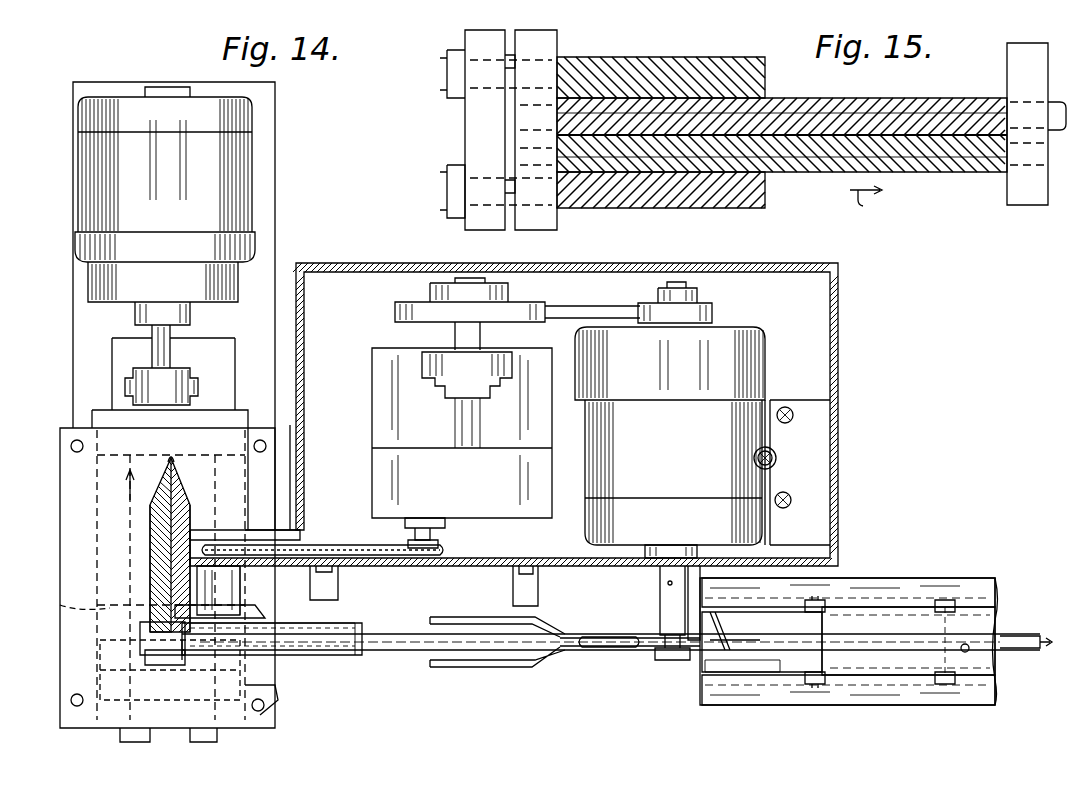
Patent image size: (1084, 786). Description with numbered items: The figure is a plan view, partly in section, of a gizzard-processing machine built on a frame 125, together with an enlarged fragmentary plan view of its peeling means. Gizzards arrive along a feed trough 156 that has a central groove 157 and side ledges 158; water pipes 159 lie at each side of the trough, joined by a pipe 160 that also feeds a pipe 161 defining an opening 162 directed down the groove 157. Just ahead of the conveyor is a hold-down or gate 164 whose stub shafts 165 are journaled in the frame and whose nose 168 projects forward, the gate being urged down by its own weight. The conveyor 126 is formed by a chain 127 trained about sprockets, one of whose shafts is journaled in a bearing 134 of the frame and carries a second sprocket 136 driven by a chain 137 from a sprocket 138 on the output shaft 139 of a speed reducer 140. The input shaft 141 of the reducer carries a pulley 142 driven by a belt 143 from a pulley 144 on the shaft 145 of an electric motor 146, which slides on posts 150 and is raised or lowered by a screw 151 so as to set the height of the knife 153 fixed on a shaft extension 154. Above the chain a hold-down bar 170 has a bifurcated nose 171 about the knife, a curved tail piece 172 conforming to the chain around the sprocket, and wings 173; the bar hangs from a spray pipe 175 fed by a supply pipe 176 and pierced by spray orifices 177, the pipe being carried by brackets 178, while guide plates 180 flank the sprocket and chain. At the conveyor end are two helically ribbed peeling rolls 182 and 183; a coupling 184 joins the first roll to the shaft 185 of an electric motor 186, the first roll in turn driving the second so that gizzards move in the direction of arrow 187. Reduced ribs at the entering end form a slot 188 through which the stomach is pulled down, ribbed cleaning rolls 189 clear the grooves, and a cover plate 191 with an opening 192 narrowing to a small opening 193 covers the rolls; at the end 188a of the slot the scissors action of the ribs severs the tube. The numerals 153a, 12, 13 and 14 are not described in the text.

In FIG. 14, the frame 125 is at (77, 288).
In FIG. 15, the frame 125 is at (557, 226).
In FIG. 14, the electric motor 186 is at (90, 174).
In FIG. 14, the motor shaft 185 is at (158, 348).
In FIG. 14, the coupling 184 is at (130, 385).
In FIG. 14, the small opening 193 is at (175, 470).
In FIG. 14, the peeling roll 182 is at (162, 522).
In FIG. 15, the peeling roll 182 is at (945, 98).
In FIG. 14, the peeling roll 183 is at (160, 432).
In FIG. 15, the peeling roll 183 is at (945, 173).
In FIG. 14, the opening 192 is at (190, 500).
In FIG. 14, the arrow 187 is at (128, 490).
In FIG. 15, the arrow 187 is at (868, 203).
In FIG. 14, the slot 188 is at (165, 605).
In FIG. 15, the slot 188 is at (675, 133).
In FIG. 14, the end of slot 188a is at (165, 638).
In FIG. 14, the cleaning rolls 189 is at (130, 612).
In FIG. 15, the cleaning rolls 189 is at (612, 58).
In FIG. 14, the curved tail piece 172 is at (150, 636).
In FIG. 14, the supply pipe 176 is at (195, 660).
In FIG. 14, the second sprocket 136 is at (245, 540).
In FIG. 14, the bearing 134 is at (240, 585).
In FIG. 14, the guide plates 180 is at (255, 612).
In FIG. 14, the chain 137 is at (335, 548).
In FIG. 14, the output shaft 139 is at (420, 528).
In FIG. 14, the sprocket 138 is at (442, 548).
In FIG. 14, the speed reducer 140 is at (462, 433).
In FIG. 14, the input shaft 141 is at (455, 410).
In FIG. 14, the cover plate 191 is at (302, 432).
In FIG. 14, the pulley 142 is at (400, 308).
In FIG. 14, the belt 143 is at (575, 314).
In FIG. 14, the pulley 144 is at (712, 310).
In FIG. 14, the motor shaft 145 is at (680, 283).
In FIG. 14, the electric motor 146 is at (670, 442).
In FIG. 14, the posts 150 is at (786, 407).
In FIG. 14, the screw 151 is at (777, 455).
In FIG. 14, the brackets 178 is at (338, 585).
In FIG. 14, the hold-down bar 170 is at (396, 640).
In FIG. 14, the spray pipe 175 is at (322, 656).
In FIG. 14, the spray orifices 177 is at (352, 630).
In FIG. 14, the wings 173 is at (440, 632).
In FIG. 14, the chain 127 is at (546, 652).
In FIG. 14, the conveyor 126 is at (580, 660).
In FIG. 14, the bifurcated nose 171 is at (605, 637).
In FIG. 14, the shaft extension 154 is at (698, 605).
In FIG. 14, the feed trough 156 is at (870, 608).
In FIG. 14, the central groove 157 is at (920, 656).
In FIG. 14, the side ledges 158 is at (875, 628).
In FIG. 14, the slot 153a is at (758, 640).
In FIG. 14, the knife 153 is at (700, 648).
In FIG. 14, the nose 168 is at (716, 668).
In FIG. 14, the hold-down or gate 164 is at (798, 658).
In FIG. 14, the stub shafts 165 is at (818, 605).
In FIG. 14, the water pipes 159 is at (945, 605).
In FIG. 14, the opening 162 is at (985, 612).
In FIG. 14, the pipe 161 is at (975, 645).
In FIG. 14, the pipe 160 is at (1025, 652).
In FIG. 14, the frame member 12 is at (985, 580).
In FIG. 14, the frame member 13 is at (995, 620).
In FIG. 14, the frame member 14 is at (990, 655).